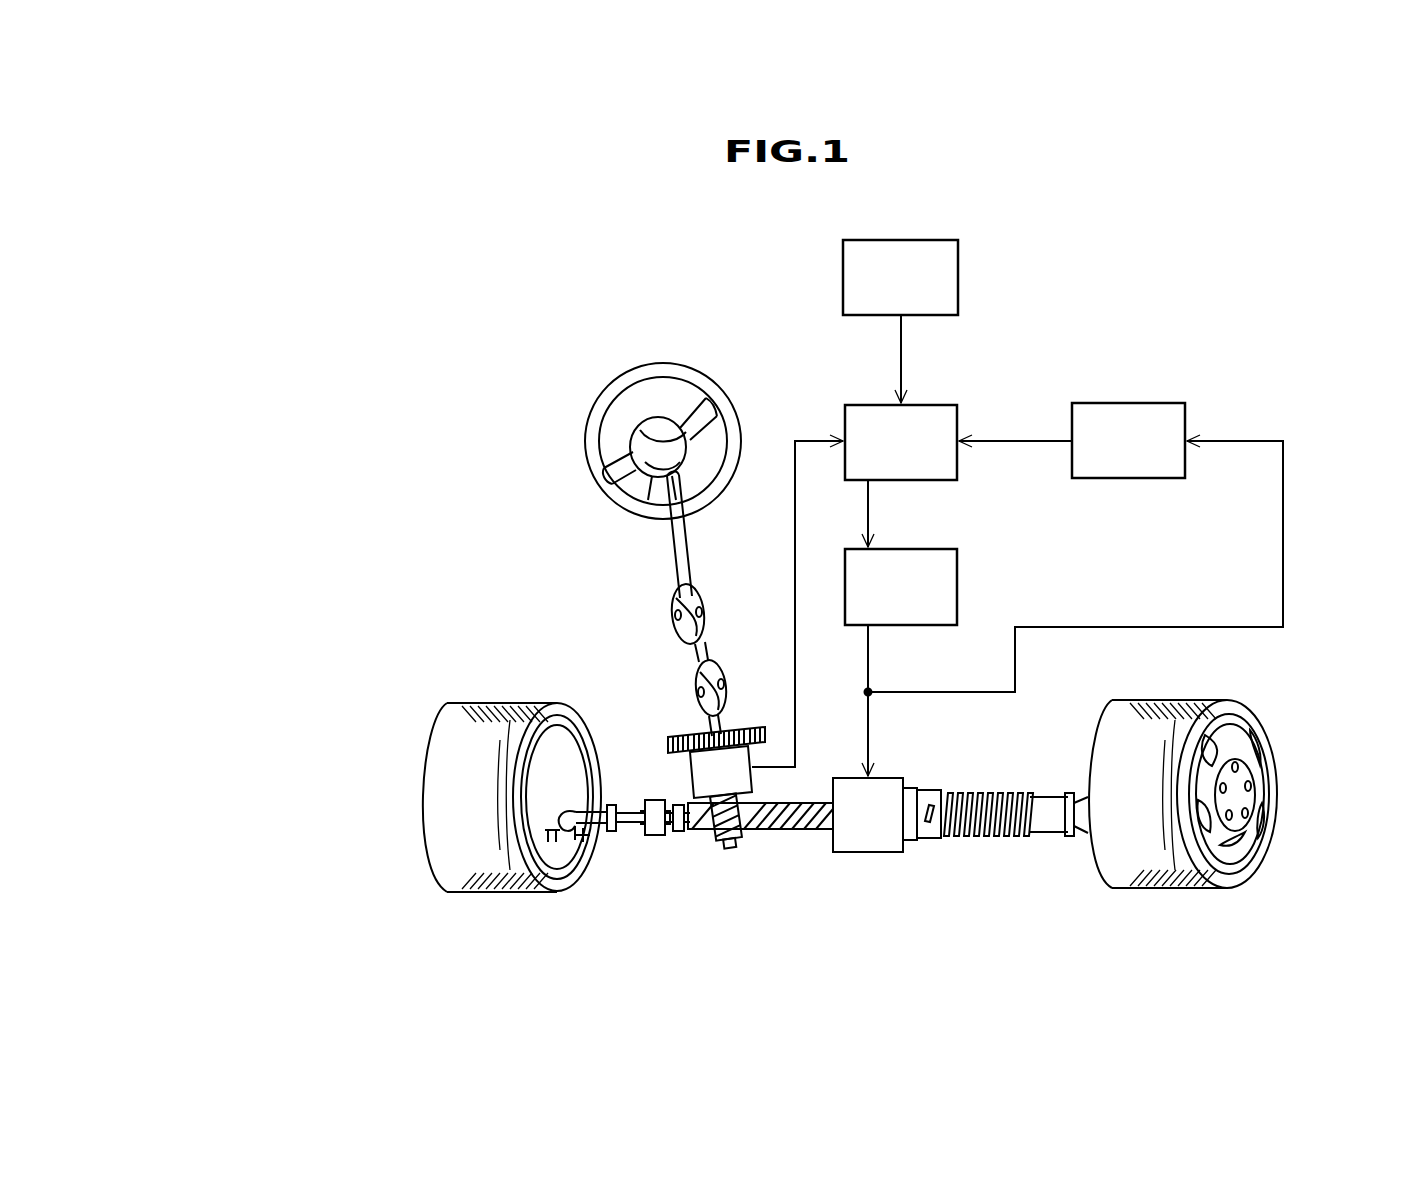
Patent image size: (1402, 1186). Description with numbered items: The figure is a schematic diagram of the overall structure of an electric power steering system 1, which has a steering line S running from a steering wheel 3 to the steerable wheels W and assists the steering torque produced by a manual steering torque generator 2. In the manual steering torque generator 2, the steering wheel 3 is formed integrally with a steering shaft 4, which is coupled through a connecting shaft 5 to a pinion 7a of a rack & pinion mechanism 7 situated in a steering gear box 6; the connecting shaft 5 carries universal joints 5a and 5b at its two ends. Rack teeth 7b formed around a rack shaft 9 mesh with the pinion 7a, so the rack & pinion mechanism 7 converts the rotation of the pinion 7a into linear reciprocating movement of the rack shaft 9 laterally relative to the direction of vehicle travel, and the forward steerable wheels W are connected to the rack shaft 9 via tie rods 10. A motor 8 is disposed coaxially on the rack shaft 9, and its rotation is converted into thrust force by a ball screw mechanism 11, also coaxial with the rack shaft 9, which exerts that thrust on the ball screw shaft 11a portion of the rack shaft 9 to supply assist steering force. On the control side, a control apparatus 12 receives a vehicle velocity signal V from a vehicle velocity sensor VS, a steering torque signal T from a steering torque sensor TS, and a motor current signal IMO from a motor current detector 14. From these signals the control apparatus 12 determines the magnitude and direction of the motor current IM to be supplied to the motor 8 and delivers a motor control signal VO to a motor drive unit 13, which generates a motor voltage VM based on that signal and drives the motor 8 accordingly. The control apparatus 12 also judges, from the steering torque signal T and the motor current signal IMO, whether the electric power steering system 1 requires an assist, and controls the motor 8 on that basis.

The electric power steering system 1 is at (542, 300).
The steering line S is at (666, 352).
The manual steering torque generator 2 is at (565, 580).
The steering wheel 3 is at (595, 425).
The steering shaft 4 is at (670, 548).
The connecting shaft 5 is at (700, 646).
The universal joint 5a is at (680, 636).
The universal joint 5b is at (698, 668).
The steering torque sensor TS is at (702, 775).
The steering torque signal T is at (797, 604).
The steering gear box 6 is at (745, 902).
The rack & pinion mechanism 7 is at (700, 857).
The pinion 7a is at (740, 838).
The rack teeth 7b is at (790, 830).
The motor 8 is at (868, 853).
The rack shaft 9 is at (1048, 833).
The tie rods 10 is at (573, 820).
The ball screw mechanism 11 is at (1005, 782).
The ball screw shaft 11a is at (985, 838).
The steerable wheels W is at (418, 790).
The vehicle velocity sensor VS is at (958, 272).
The vehicle velocity signal V is at (888, 359).
The control apparatus 12 is at (930, 405).
The motor control signal VO is at (890, 513).
The motor drive unit 13 is at (935, 549).
The motor voltage VM is at (892, 700).
The motor current detector 14 is at (1160, 403).
The motor current signal IMO is at (1015, 427).
The motor current IM is at (1075, 554).